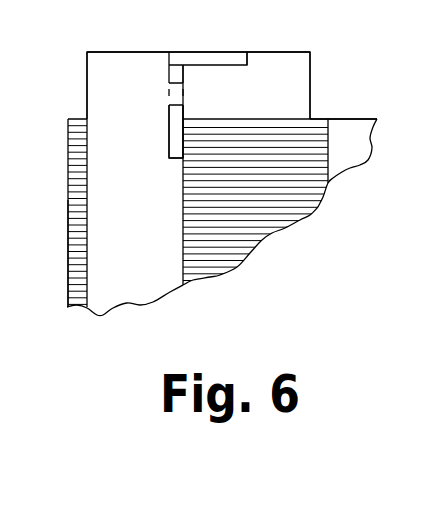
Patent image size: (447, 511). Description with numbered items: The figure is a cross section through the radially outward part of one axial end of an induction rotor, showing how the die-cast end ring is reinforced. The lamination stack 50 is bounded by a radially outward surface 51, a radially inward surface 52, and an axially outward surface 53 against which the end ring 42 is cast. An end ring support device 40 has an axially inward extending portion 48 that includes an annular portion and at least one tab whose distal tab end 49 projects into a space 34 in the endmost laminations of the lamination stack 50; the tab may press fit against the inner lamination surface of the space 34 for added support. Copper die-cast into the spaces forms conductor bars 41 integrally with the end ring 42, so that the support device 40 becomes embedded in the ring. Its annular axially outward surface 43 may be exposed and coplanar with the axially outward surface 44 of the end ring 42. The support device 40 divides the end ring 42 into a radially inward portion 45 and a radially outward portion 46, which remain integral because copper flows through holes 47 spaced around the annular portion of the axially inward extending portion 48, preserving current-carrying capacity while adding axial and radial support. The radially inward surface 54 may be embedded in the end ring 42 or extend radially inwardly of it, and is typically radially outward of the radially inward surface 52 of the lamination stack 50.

The space 34 is at (90, 220).
The end ring support device 40 is at (172, 108).
The conductor bars 41 is at (132, 285).
The end ring 42 is at (117, 62).
The axially outward surface 43 is at (222, 55).
The axially outward surface 44 is at (132, 50).
The radially inward portion 45 is at (262, 80).
The radially outward portion 46 is at (88, 63).
The holes 47 is at (168, 100).
The axially inward extending portion 48 is at (167, 140).
The distal tab end 49 is at (174, 160).
The lamination stack 50 is at (253, 175).
The radially outward surface 51 is at (68, 192).
The radially inward surface 52 is at (328, 152).
The axially outward surface 53 is at (288, 117).
The radially inward surface 54 is at (248, 58).